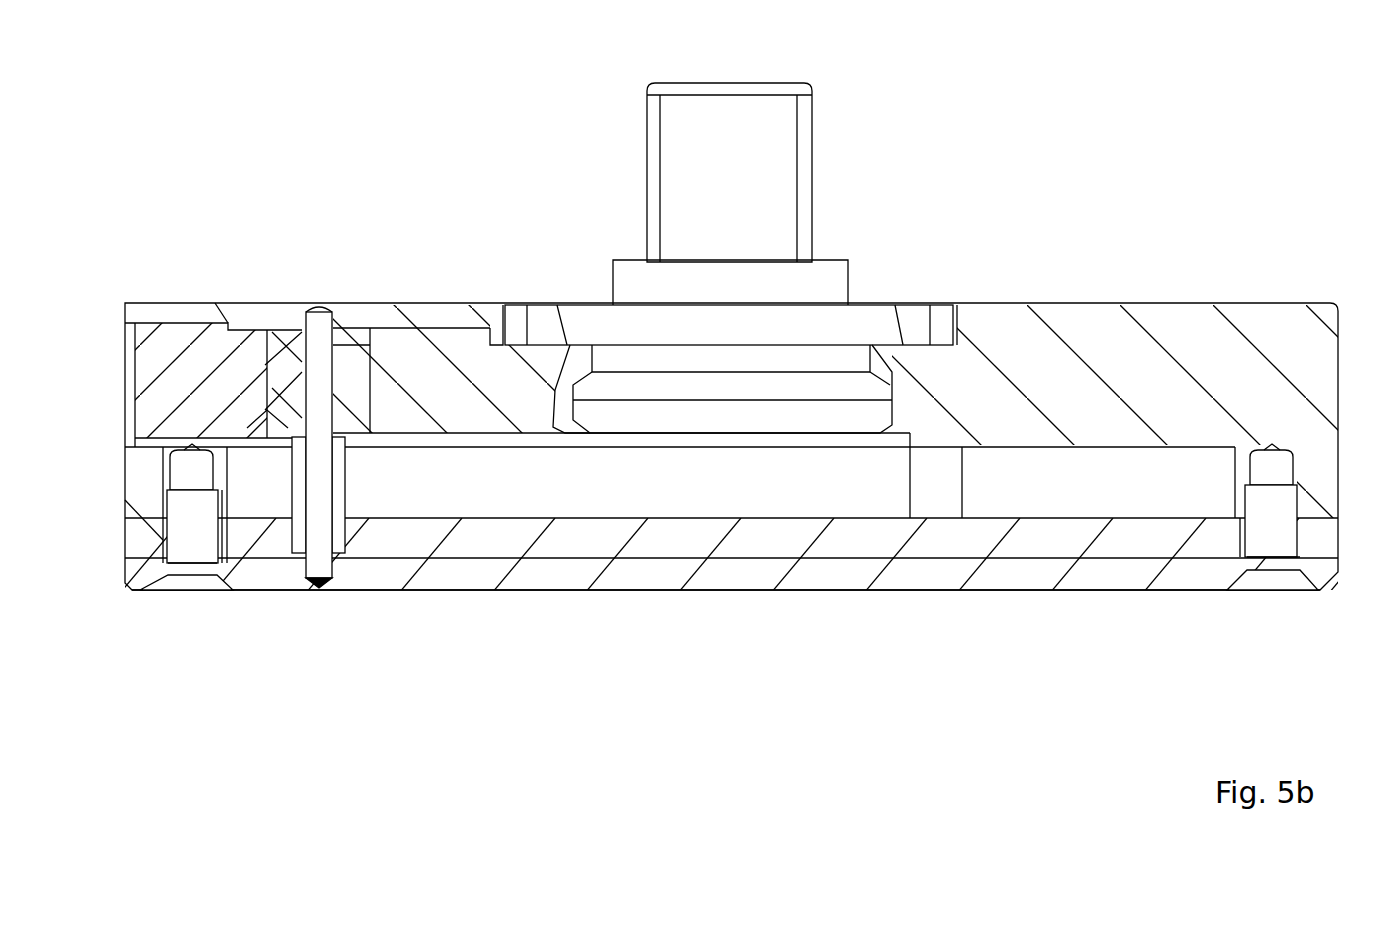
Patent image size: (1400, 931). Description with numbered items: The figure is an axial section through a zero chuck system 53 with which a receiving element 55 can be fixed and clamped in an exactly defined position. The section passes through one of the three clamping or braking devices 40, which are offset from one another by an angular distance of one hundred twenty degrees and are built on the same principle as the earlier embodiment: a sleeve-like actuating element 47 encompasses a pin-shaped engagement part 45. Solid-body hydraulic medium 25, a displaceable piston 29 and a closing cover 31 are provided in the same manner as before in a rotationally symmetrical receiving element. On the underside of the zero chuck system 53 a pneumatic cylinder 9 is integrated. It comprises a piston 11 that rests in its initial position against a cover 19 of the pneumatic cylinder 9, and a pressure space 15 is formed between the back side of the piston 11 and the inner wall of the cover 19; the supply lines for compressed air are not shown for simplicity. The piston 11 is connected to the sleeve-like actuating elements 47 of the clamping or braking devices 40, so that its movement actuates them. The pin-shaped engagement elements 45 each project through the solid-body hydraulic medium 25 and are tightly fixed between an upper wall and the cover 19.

The zero chuck system 53 is at (1044, 138).
The receiving element 55 is at (790, 130).
The displaceable piston 29 is at (462, 350).
The solid-body hydraulic medium 25 is at (363, 345).
The closing cover 31 is at (158, 378).
The clamping or braking device 40 is at (286, 387).
The pin-shaped engagement part 45 is at (327, 468).
The sleeve-like actuating element 47 is at (352, 494).
The piston 11 is at (692, 532).
The pressure space 15 is at (773, 560).
The cover 19 is at (1093, 578).
The pneumatic cylinder 9 is at (1186, 484).